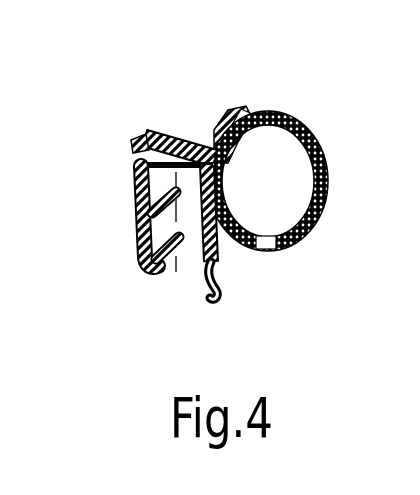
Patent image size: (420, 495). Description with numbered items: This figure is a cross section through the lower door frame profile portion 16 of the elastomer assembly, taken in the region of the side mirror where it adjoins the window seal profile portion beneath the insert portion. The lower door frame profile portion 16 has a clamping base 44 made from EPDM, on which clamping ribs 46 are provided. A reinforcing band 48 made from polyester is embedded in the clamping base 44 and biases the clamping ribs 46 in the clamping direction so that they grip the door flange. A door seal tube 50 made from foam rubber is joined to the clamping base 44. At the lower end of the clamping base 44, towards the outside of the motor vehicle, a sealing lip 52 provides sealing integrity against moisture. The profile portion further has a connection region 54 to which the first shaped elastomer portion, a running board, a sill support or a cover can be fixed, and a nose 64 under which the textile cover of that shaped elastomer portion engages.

The lower door frame profile portion 16 is at (291, 140).
The clamping base 44 is at (177, 224).
The clamping ribs 46 is at (165, 282).
The reinforcing band 48 is at (137, 172).
The door seal tube 50 is at (322, 233).
The sealing lip 52 is at (237, 303).
The connection region 54 is at (172, 108).
The nose 64 is at (214, 96).